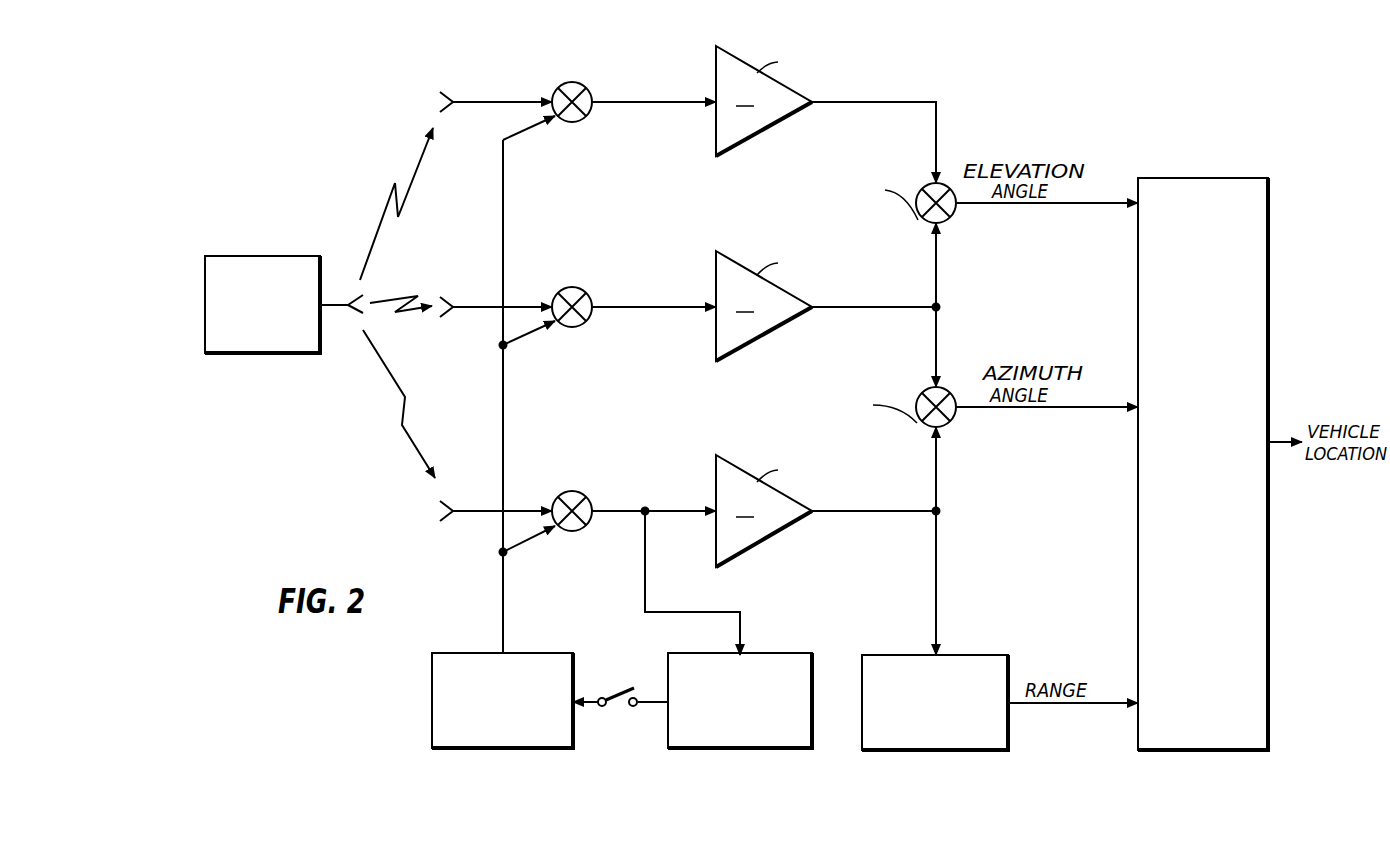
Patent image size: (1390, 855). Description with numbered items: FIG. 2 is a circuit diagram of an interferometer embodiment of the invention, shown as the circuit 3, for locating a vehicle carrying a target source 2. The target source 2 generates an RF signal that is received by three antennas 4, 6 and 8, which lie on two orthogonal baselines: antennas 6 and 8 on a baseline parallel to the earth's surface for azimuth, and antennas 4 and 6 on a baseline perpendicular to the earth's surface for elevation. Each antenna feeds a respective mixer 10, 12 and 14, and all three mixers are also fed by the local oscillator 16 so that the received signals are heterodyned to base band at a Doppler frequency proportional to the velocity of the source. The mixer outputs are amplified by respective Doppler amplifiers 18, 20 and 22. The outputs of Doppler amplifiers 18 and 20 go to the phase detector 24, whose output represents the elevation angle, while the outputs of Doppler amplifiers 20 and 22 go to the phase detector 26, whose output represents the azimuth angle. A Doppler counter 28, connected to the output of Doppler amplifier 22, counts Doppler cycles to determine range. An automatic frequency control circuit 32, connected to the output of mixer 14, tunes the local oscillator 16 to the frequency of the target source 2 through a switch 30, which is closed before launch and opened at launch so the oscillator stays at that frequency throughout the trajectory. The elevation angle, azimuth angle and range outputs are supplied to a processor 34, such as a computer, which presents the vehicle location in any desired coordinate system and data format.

The target source 2 is at (272, 256).
The circuit 3 is at (964, 88).
The antenna 4 is at (449, 96).
The antenna 6 is at (450, 300).
The antenna 8 is at (451, 516).
The mixer 10 is at (586, 88).
The mixer 12 is at (586, 293).
The mixer 14 is at (586, 497).
The local oscillator 16 is at (535, 658).
The Doppler amplifier 18 is at (795, 94).
The Doppler amplifier 20 is at (795, 298).
The Doppler amplifier 22 is at (795, 504).
The phase detector 24 is at (950, 215).
The phase detector 26 is at (950, 420).
The Doppler counter 28 is at (985, 660).
The switch 30 is at (617, 692).
The automatic frequency control circuit 32 is at (783, 658).
The processor 34 is at (1258, 266).